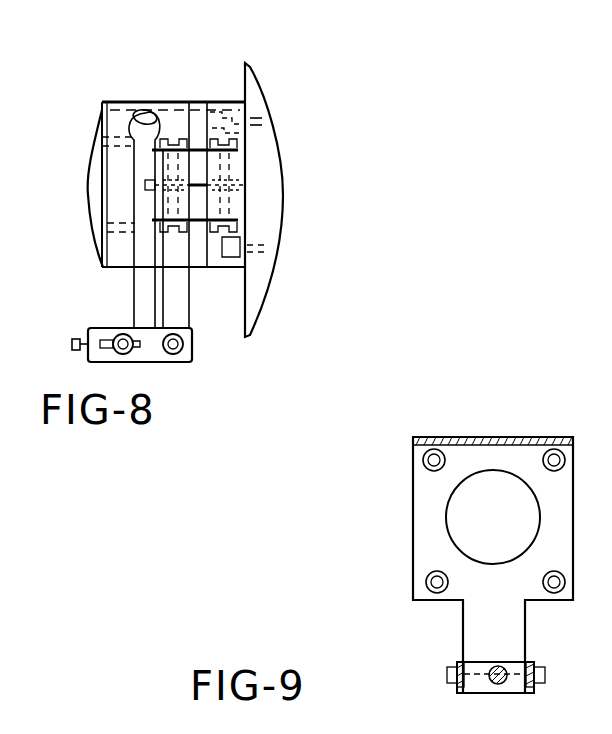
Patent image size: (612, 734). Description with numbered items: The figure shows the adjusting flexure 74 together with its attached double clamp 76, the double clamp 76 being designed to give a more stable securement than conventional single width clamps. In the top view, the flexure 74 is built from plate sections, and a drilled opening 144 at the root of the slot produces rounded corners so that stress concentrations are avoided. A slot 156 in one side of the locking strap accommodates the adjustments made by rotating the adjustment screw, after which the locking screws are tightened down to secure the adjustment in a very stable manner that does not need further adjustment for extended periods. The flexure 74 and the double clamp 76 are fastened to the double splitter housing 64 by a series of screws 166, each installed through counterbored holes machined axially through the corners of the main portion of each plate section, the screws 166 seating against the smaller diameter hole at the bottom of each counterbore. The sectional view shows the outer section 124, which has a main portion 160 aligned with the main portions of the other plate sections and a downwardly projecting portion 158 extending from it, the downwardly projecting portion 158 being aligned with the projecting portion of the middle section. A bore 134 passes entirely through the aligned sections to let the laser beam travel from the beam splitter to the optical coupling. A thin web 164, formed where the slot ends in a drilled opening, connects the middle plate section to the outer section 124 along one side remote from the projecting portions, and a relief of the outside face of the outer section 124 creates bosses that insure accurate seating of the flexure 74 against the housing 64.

In FIG. 8, the double splitter housing 64 is at (308, 112).
In FIG. 8, the adjusting flexure 74 is at (191, 53).
In FIG. 8, the double clamp 76 is at (88, 197).
In FIG. 8, the drilled opening 144 is at (135, 115).
In FIG. 8, the slot 156 is at (108, 343).
In FIG. 8, the screws 166 is at (221, 117).
In FIG. 9, the outer section 124 is at (402, 437).
In FIG. 9, the bore 134 is at (497, 470).
In FIG. 9, the downwardly projecting portion 158 is at (485, 630).
In FIG. 9, the main portion 160 is at (422, 513).
In FIG. 9, the thin web 164 is at (522, 437).